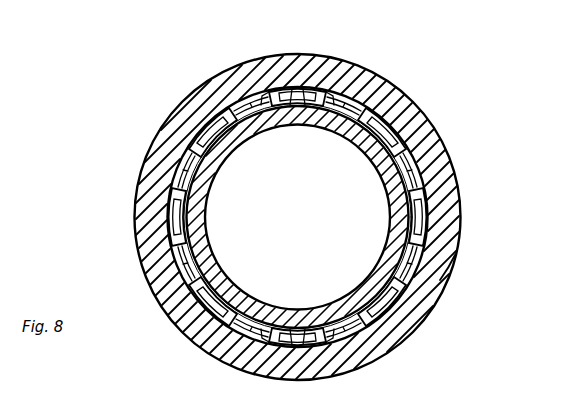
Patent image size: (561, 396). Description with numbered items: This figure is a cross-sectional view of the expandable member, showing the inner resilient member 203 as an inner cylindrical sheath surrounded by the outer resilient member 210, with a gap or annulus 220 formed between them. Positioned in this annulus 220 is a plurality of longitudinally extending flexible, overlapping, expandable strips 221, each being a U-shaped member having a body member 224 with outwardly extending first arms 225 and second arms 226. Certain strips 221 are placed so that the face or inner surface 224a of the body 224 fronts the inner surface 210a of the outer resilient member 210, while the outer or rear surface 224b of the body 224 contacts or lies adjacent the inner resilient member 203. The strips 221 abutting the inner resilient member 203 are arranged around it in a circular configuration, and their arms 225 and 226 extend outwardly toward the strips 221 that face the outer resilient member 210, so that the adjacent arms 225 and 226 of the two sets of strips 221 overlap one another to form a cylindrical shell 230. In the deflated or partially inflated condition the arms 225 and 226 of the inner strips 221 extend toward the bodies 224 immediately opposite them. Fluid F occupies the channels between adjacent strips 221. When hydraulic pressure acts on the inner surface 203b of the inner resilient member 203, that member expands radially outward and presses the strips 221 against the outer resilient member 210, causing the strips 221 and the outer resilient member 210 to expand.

The gap or annulus 220 is at (325, 216).
The cylindrical shell 230 is at (408, 91).
The outer resilient member 210 is at (452, 230).
The inner surface of outer resilient member 210a is at (440, 285).
The inner resilient member 203 is at (298, 217).
The inner surface of inner resilient member 203b is at (400, 219).
The body member 224 is at (301, 217).
The face or inner surface of body 224a is at (202, 137).
The outer or rear surface of body 224b is at (432, 140).
The longitudinal strip 221 is at (183, 160).
The first arm 225 is at (293, 88).
The second arm 226 is at (247, 92).
The fluid F is at (420, 200).